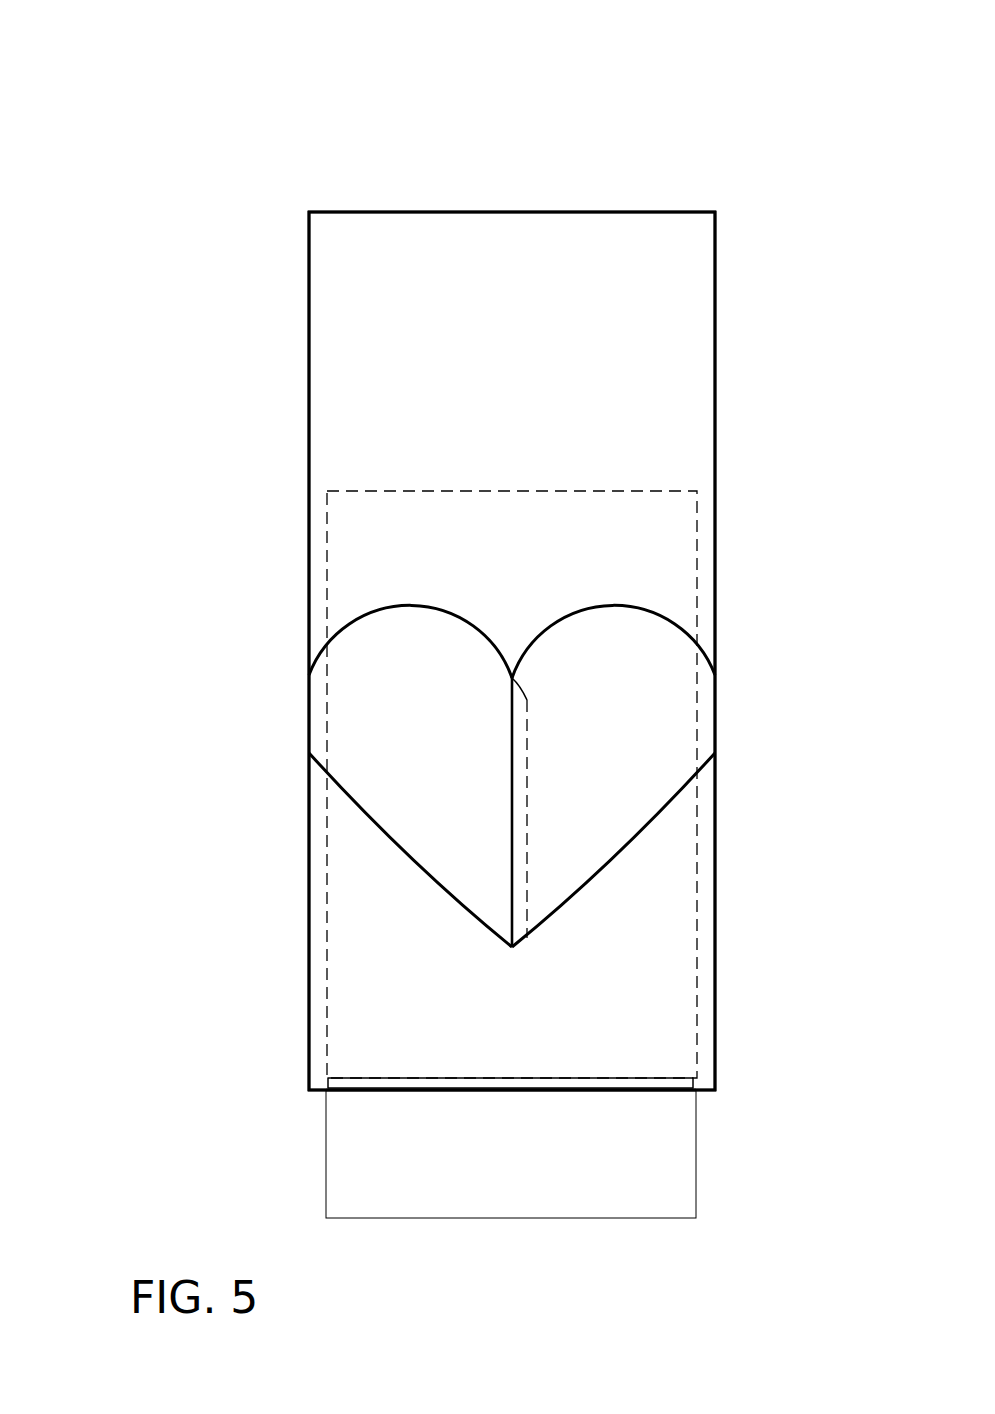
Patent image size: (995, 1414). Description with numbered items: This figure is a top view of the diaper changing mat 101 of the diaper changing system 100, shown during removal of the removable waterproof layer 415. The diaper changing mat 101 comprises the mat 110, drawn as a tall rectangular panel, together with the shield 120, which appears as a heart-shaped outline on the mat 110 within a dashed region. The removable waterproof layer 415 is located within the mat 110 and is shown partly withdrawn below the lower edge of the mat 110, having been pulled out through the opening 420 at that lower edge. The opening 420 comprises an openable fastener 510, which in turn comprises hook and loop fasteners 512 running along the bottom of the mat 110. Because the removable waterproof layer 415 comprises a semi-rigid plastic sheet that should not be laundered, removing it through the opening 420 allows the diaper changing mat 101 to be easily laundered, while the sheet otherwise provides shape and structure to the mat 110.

The diaper changing system 100 is at (165, 90).
The diaper changing mat 101 is at (168, 152).
The mat 110 is at (347, 213).
The shield 120 is at (669, 610).
The hook and loop fasteners 512 is at (338, 1083).
The openable fastener 510 is at (678, 1077).
The opening 420 is at (700, 1095).
The removable waterproof layer 415 is at (672, 1210).